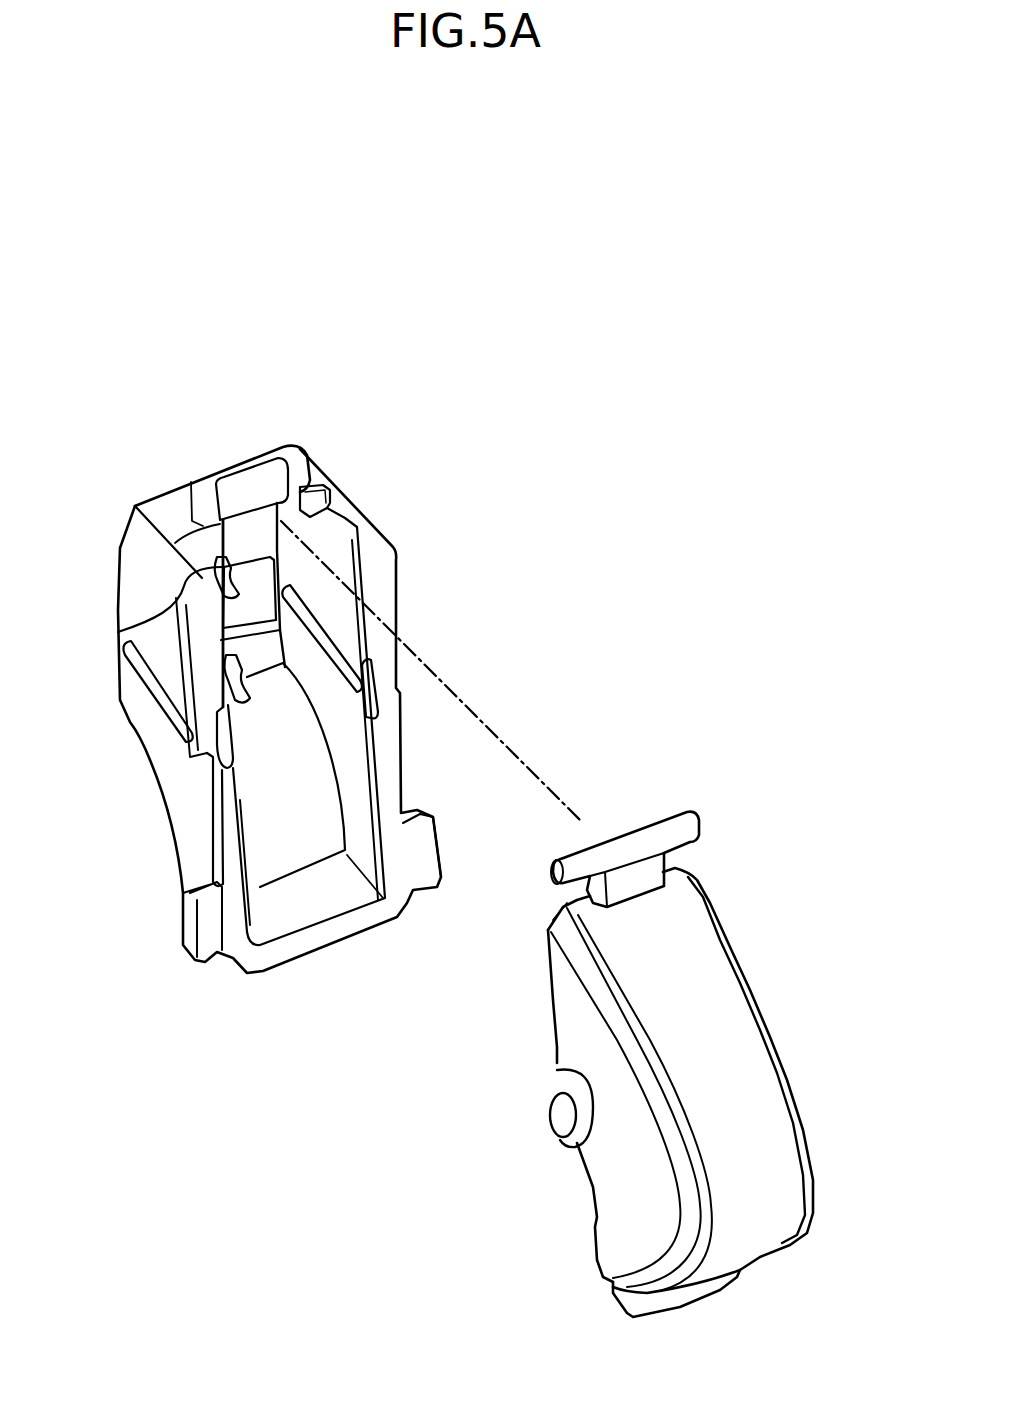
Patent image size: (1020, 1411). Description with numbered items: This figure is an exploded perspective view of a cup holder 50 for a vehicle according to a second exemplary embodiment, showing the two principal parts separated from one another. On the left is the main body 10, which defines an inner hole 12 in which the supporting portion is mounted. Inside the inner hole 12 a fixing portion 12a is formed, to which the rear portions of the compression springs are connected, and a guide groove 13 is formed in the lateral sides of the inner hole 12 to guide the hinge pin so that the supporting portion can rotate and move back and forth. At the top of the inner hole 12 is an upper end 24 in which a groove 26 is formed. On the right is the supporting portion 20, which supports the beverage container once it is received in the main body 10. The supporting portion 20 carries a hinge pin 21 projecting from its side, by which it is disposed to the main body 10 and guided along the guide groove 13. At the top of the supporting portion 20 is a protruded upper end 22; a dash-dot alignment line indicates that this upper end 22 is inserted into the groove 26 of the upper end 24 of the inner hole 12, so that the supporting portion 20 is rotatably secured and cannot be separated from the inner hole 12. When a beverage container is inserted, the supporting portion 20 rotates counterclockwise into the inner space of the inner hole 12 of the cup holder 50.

The main body 10 is at (127, 607).
The inner hole 12 is at (288, 806).
The fixing portion 12a is at (220, 588).
The guide groove 13 is at (153, 687).
The upper end 24 is at (243, 467).
The groove 26 is at (309, 468).
The supporting portion 20 is at (753, 1048).
The hinge pin 21 is at (557, 1125).
The upper end 22 is at (660, 827).
The cup holder 50 is at (787, 1220).